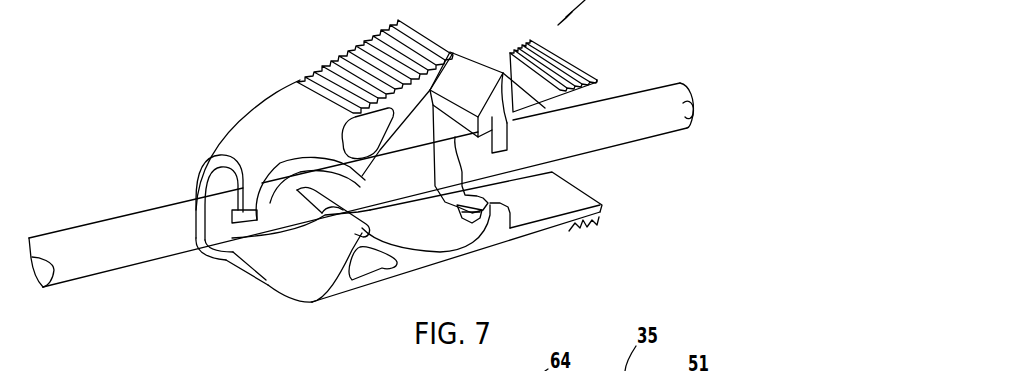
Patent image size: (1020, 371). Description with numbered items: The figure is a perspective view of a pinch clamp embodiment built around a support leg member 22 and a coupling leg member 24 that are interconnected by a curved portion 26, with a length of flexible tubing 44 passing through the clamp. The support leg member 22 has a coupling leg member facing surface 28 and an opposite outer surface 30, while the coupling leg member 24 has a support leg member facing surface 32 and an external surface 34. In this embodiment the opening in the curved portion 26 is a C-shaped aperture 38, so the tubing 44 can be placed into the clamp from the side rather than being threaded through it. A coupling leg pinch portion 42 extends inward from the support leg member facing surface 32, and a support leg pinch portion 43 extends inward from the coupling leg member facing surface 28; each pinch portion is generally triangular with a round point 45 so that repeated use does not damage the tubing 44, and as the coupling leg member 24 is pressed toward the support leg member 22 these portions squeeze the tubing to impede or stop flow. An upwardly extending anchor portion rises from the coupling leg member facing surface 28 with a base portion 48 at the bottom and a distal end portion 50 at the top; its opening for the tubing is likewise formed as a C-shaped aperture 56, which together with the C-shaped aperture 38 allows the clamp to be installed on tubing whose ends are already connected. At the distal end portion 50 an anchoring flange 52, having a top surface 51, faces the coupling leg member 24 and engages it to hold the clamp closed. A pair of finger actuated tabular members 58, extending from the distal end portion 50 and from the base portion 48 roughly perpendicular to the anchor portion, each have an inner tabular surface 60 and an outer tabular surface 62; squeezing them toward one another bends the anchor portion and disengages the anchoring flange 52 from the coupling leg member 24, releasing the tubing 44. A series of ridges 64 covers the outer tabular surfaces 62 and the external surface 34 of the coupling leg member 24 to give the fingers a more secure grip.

The support leg member 22 is at (389, 252).
The coupling leg member 24 is at (298, 156).
The curved portion 26 is at (228, 253).
The coupling leg member facing surface 28 is at (443, 228).
The outer surface 30 is at (407, 273).
The support leg member facing surface 32 is at (392, 140).
The external surface 34 is at (324, 131).
The C-shaped aperture 38 is at (190, 186).
The coupling leg pinch portion 42 is at (383, 150).
The support leg pinch portion 43 is at (352, 258).
The tubing 44 is at (128, 212).
The round point 45 is at (350, 233).
The base portion 48 is at (524, 228).
The distal end portion 50 is at (488, 111).
The top surface 51 is at (478, 94).
The anchoring flange 52 is at (488, 120).
The C-shaped aperture 56 is at (460, 224).
The finger actuated tabular members 58 is at (597, 82).
The inner tabular surface 60 is at (548, 106).
The outer tabular surface 62 is at (493, 68).
The ridges 64 is at (350, 42).